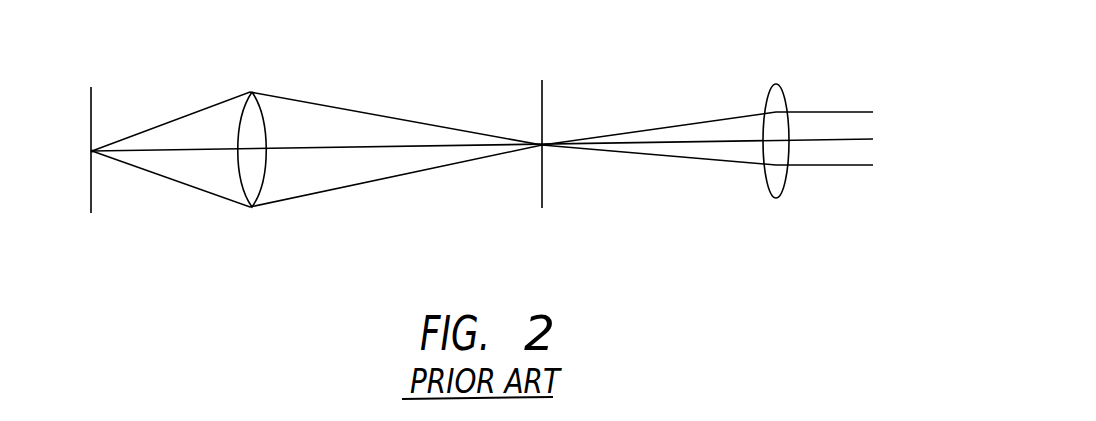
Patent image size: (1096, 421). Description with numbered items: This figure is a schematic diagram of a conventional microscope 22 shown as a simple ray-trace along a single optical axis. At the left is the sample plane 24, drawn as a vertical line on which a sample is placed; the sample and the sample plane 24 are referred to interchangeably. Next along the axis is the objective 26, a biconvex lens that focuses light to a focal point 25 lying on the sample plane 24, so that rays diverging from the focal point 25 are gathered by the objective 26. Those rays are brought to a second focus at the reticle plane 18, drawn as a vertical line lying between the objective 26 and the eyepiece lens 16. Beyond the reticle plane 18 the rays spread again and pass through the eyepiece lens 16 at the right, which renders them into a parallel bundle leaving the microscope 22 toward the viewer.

The eyepiece lens 16 is at (776, 84).
The reticle plane 18 is at (542, 177).
The microscope 22 is at (330, 220).
The sample plane 24 is at (91, 117).
The focal point 25 is at (92, 152).
The objective 26 is at (253, 92).